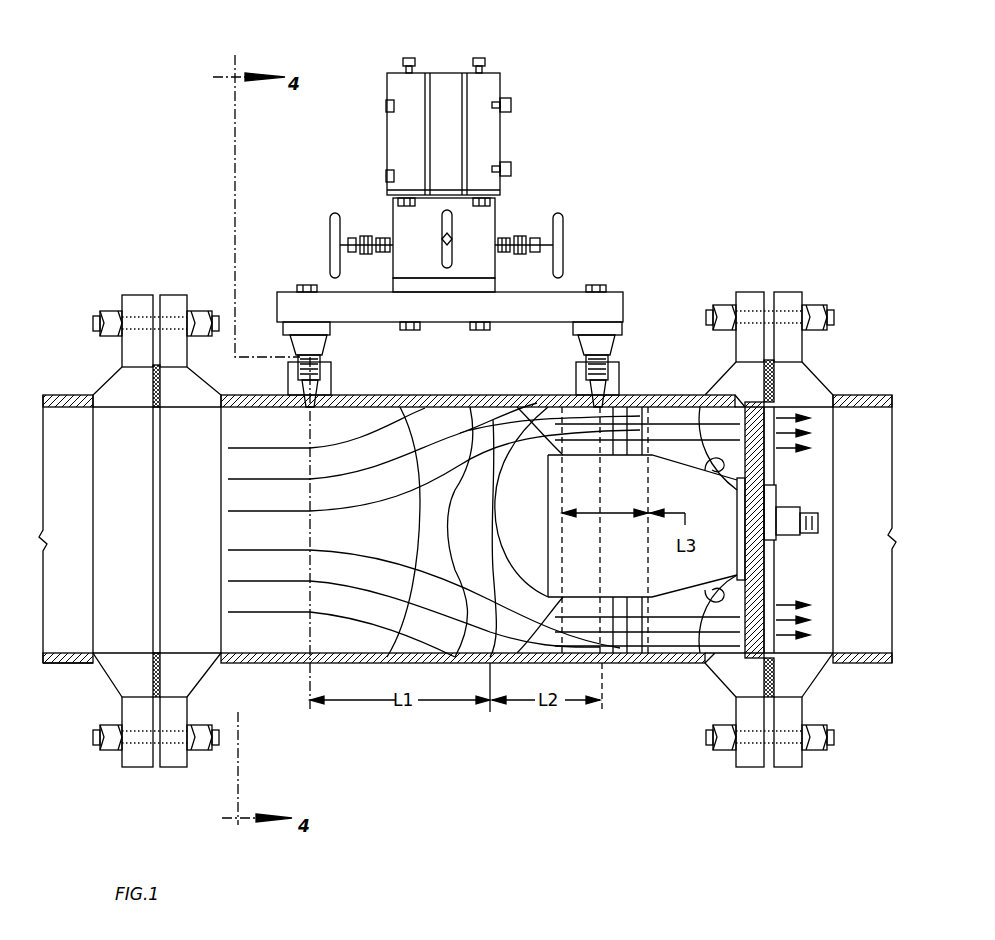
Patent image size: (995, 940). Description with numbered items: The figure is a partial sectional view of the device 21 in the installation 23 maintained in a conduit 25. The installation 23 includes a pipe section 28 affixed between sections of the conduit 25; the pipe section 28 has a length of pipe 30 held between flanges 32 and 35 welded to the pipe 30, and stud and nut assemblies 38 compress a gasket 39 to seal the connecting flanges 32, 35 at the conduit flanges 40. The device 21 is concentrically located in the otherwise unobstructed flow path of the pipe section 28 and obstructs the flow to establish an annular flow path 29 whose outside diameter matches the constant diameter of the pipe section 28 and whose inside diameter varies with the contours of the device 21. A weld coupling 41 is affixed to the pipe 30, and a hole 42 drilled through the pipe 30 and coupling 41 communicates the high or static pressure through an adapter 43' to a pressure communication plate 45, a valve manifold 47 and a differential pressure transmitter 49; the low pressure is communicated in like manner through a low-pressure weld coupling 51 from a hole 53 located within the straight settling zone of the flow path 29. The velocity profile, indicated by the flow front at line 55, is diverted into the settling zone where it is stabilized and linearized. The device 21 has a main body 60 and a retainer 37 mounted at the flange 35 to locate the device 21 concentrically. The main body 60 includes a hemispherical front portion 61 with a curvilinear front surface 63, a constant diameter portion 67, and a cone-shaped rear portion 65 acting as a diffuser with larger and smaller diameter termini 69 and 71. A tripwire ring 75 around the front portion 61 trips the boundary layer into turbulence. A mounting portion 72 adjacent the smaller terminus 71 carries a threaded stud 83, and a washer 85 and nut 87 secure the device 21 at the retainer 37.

The device 21 is at (633, 667).
The installation 23 is at (569, 156).
The conduit 25 is at (60, 393).
The pipe section 28 is at (650, 410).
The annular flow path 29 is at (680, 405).
The pipe 30 is at (232, 393).
The flange 32 is at (172, 295).
The flange 35 is at (737, 768).
The retainer 37 is at (767, 405).
The stud and nut assemblies 38 is at (110, 750).
The gasket 39 is at (153, 683).
The conduit flanges 40 is at (130, 295).
The weld coupling 41 is at (238, 345).
The hole 42 is at (318, 390).
The adapter 43' is at (283, 304).
The pressure communication plate 45 is at (331, 285).
The valve manifold 47 is at (393, 220).
The differential pressure transmitter 49 is at (388, 78).
The low-pressure weld coupling 51 is at (600, 393).
The hole 53 is at (610, 387).
The line 55 is at (428, 665).
The main body 60 is at (453, 540).
The front portion 61 is at (465, 428).
The front surface 63 is at (420, 430).
The rear portion 65 is at (690, 410).
The constant diameter portion 67 is at (562, 412).
The larger diameter terminus 69 is at (650, 660).
The smaller diameter terminus 71 is at (694, 665).
The mounting portion 72 is at (705, 408).
The tripwire ring 75 is at (525, 412).
The threaded stud 83 is at (818, 525).
The washer 85 is at (768, 490).
The nut 87 is at (776, 505).